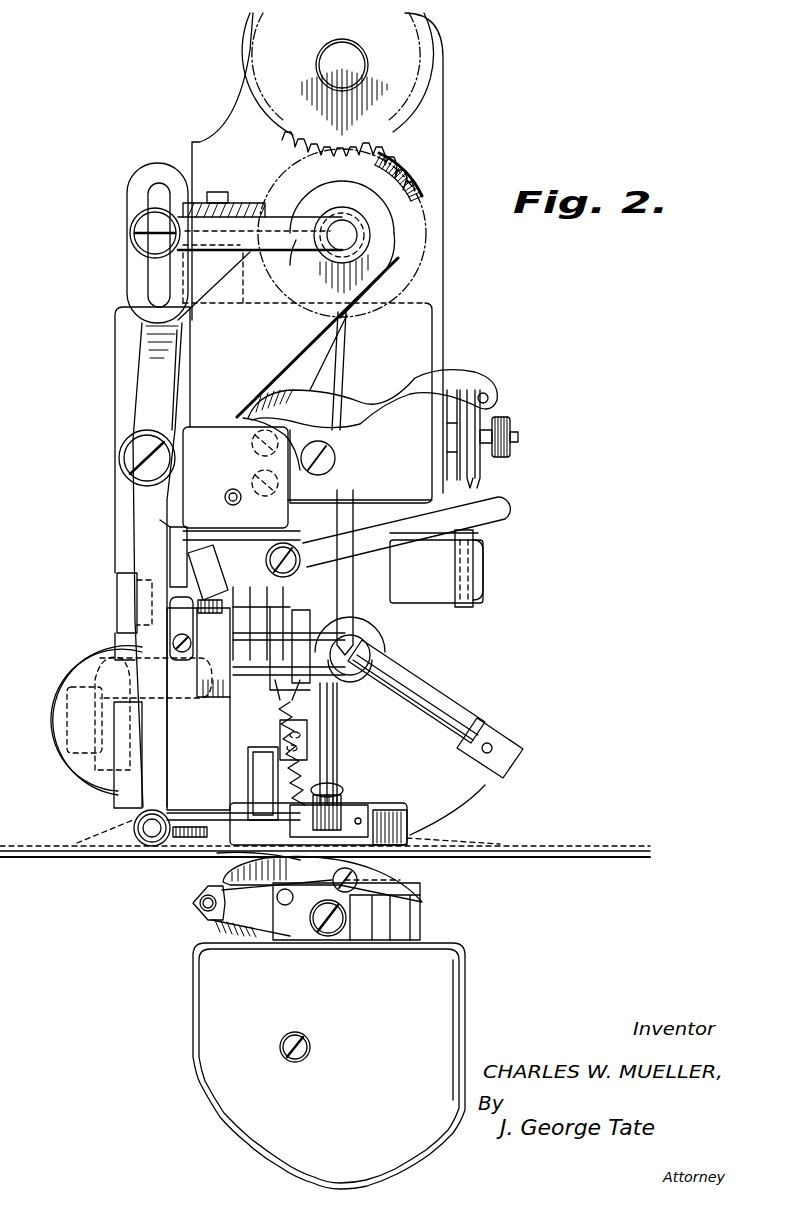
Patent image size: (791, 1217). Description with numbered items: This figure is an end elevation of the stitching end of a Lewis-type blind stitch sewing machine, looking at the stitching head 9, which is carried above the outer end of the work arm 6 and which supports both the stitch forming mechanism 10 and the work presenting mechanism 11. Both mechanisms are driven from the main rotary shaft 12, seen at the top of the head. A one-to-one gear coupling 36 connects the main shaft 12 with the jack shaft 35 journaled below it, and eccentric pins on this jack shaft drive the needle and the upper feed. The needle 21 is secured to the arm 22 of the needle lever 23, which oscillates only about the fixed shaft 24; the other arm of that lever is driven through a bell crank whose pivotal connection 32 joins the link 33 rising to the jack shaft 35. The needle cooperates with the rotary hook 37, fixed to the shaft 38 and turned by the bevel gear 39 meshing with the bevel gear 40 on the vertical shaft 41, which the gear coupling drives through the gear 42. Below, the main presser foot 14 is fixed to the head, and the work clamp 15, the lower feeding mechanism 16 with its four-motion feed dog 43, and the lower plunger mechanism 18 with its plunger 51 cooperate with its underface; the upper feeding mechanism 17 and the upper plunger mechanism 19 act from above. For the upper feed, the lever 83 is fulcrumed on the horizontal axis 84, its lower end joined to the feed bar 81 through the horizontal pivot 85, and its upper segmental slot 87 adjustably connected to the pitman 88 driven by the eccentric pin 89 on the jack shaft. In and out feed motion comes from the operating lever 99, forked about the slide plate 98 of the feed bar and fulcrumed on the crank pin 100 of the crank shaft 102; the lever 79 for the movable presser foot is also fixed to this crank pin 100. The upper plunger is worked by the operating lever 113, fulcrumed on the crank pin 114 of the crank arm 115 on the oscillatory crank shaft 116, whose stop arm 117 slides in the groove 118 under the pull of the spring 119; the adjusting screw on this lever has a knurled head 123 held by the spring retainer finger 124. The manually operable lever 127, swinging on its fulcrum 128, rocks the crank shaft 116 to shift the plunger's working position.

The work arm 6 is at (462, 987).
The stitching head 9 is at (436, 142).
The stitch forming mechanism 10 is at (451, 693).
The work presenting mechanism 11 is at (418, 886).
The main rotary shaft 12 is at (350, 61).
The main presser foot 14 is at (389, 815).
The work clamp 15 is at (219, 885).
The lower feeding mechanism 16 is at (292, 900).
The upper feeding mechanism 17 is at (150, 783).
The lower plunger mechanism 18 is at (364, 915).
The upper plunger mechanism 19 is at (344, 738).
The needle 21 is at (460, 818).
The arm of needle lever 22 is at (413, 690).
The needle lever 23 is at (433, 672).
The fixed shaft 24 is at (393, 683).
The pivotal connection 32 is at (325, 461).
The link 33 is at (333, 373).
The jack shaft 35 is at (375, 225).
The gear coupling 36 is at (291, 153).
The rotary hook 37 is at (286, 690).
The shaft 38 is at (44, 722).
The bevel gear 39 is at (67, 677).
The bevel gear 40 is at (117, 660).
The vertical shaft 41 is at (230, 205).
The gear 42 is at (212, 194).
The feed dog 43 is at (305, 905).
The plunger 51 is at (360, 920).
The lever 79 is at (333, 762).
The feed bar 81 is at (193, 845).
The lever 83 is at (137, 562).
The horizontal axis 84 is at (135, 452).
The horizontal pivot 85 is at (147, 842).
The segmental slot 87 is at (152, 282).
The pitman 88 is at (291, 259).
The eccentric pin 89 is at (350, 238).
The slide plate 98 is at (237, 800).
The operating lever 99 is at (230, 725).
The crank pin 100 is at (224, 618).
The crank shaft 102 is at (120, 604).
The operating lever 113 is at (328, 718).
The crank pin 114 is at (397, 684).
The crank arm 115 is at (336, 630).
The crank shaft 116 is at (316, 604).
The stop arm 117 is at (185, 557).
The groove 118 is at (231, 505).
The spring 119 is at (168, 527).
The knurled head 123 is at (340, 800).
The spring retainer finger 124 is at (268, 822).
The manually operable lever 127 is at (405, 522).
The fulcrum 128 is at (320, 540).